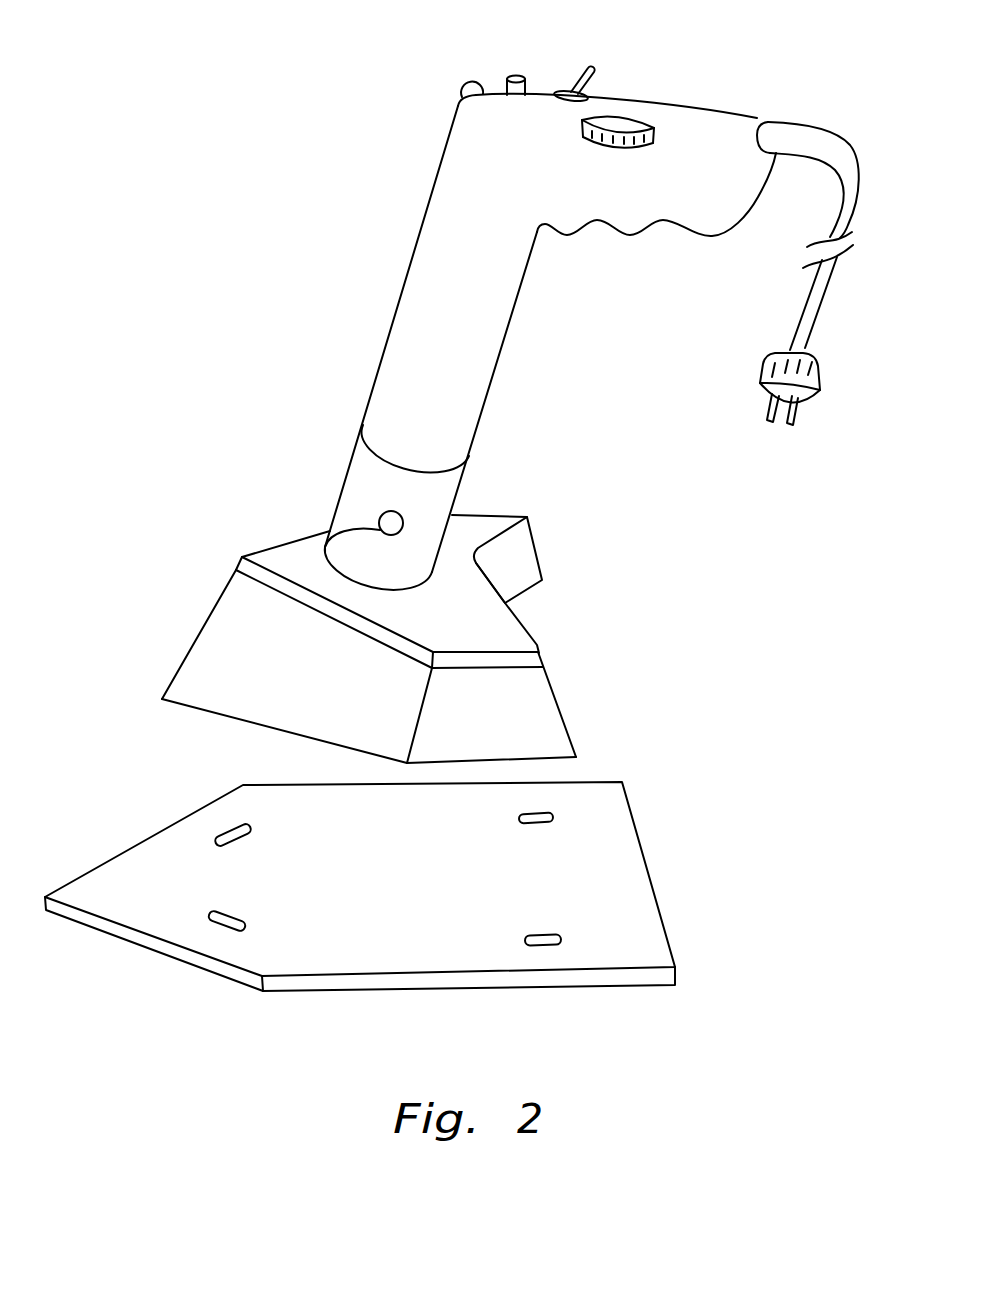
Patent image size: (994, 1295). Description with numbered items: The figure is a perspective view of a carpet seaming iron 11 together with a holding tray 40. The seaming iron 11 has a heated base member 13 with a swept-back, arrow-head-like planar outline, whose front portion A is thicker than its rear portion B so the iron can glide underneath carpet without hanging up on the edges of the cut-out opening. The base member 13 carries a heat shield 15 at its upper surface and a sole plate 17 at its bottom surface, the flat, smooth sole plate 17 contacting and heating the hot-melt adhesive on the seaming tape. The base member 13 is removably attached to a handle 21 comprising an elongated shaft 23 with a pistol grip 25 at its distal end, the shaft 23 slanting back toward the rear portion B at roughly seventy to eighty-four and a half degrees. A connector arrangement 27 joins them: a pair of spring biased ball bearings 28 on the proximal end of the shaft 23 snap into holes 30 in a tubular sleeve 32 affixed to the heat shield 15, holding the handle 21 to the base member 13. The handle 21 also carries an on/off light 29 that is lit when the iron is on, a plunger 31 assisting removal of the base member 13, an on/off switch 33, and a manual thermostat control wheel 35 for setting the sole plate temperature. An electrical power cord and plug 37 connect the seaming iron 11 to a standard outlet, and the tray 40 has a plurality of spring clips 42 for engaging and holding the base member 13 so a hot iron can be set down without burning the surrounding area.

The seaming iron 11 is at (557, 297).
The base member 13 is at (367, 597).
The heat shield 15 is at (494, 525).
The sole plate 17 is at (203, 715).
The handle 21 is at (756, 94).
The elongated shaft 23 is at (478, 335).
The pistol grip 25 is at (640, 205).
The connector arrangement 27 is at (322, 476).
The spring biased ball bearings 28 is at (325, 547).
The on/off light 29 is at (464, 82).
The holes 30 is at (399, 514).
The plunger 31 is at (521, 76).
The tubular sleeve 32 is at (355, 450).
The on/off switch 33 is at (592, 72).
The manual thermostat control wheel 35 is at (654, 128).
The electrical power cord and plug 37 is at (810, 307).
The tray 40 is at (360, 921).
The spring clips 42 is at (243, 832).
The front portion A is at (149, 651).
The rear portion B is at (606, 645).